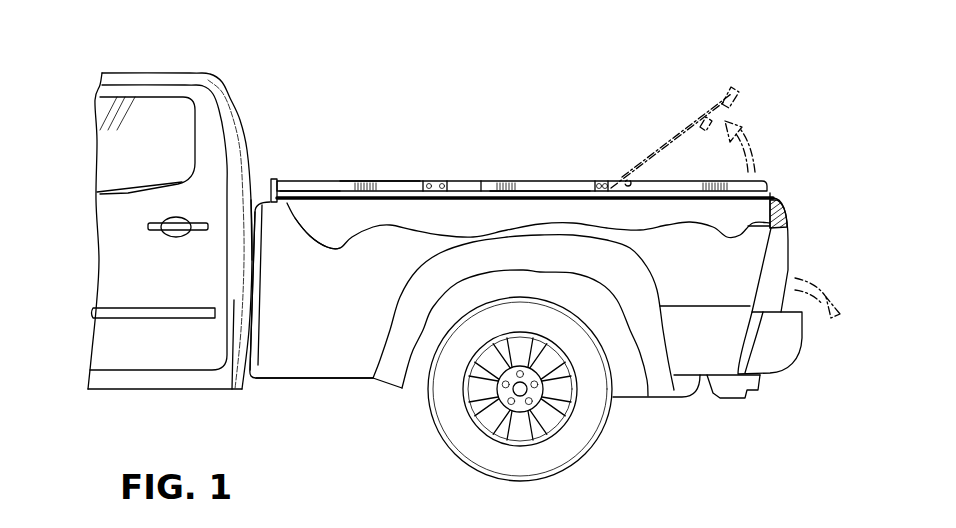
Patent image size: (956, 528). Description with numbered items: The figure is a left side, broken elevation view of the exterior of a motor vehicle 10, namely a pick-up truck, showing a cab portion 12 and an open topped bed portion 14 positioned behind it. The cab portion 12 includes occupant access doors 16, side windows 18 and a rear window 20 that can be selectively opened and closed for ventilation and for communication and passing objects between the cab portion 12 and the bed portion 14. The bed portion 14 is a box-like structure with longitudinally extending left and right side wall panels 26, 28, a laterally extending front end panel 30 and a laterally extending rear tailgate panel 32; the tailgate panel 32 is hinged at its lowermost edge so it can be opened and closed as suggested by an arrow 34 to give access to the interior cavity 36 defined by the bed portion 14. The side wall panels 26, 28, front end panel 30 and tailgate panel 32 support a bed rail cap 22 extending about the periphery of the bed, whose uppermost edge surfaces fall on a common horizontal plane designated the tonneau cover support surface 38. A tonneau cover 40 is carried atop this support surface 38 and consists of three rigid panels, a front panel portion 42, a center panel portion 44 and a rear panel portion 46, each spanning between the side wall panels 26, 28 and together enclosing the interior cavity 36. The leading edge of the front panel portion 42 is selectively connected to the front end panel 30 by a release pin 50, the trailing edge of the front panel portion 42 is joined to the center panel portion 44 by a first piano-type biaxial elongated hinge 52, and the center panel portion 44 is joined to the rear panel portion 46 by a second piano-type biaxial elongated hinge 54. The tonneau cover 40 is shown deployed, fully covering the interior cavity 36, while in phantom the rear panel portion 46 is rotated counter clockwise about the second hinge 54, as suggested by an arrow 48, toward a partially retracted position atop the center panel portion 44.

The motor vehicle 10 is at (352, 97).
The cab portion 12 is at (165, 73).
The open topped bed portion 14 is at (327, 378).
The occupant access door 16 is at (130, 337).
The side window 18 is at (130, 142).
The rear window 20 is at (240, 117).
The bed rail cap 22 is at (720, 199).
The left side wall panel 26 is at (282, 365).
The right side wall panel 28 is at (343, 233).
The front end panel 30 is at (253, 313).
The rear tailgate panel 32 is at (783, 212).
The arrow 34 is at (833, 297).
The interior cavity 36 is at (752, 205).
The tonneau cover support surface 38 is at (483, 181).
The tonneau cover 40 is at (372, 180).
The front panel portion 42 is at (315, 187).
The center panel portion 44 is at (558, 187).
The rear panel portion 46 is at (680, 187).
The arrow 48 is at (749, 140).
The release pin 50 is at (272, 191).
The first biaxial elongated hinge 52 is at (437, 181).
The second biaxial elongated hinge 54 is at (598, 178).